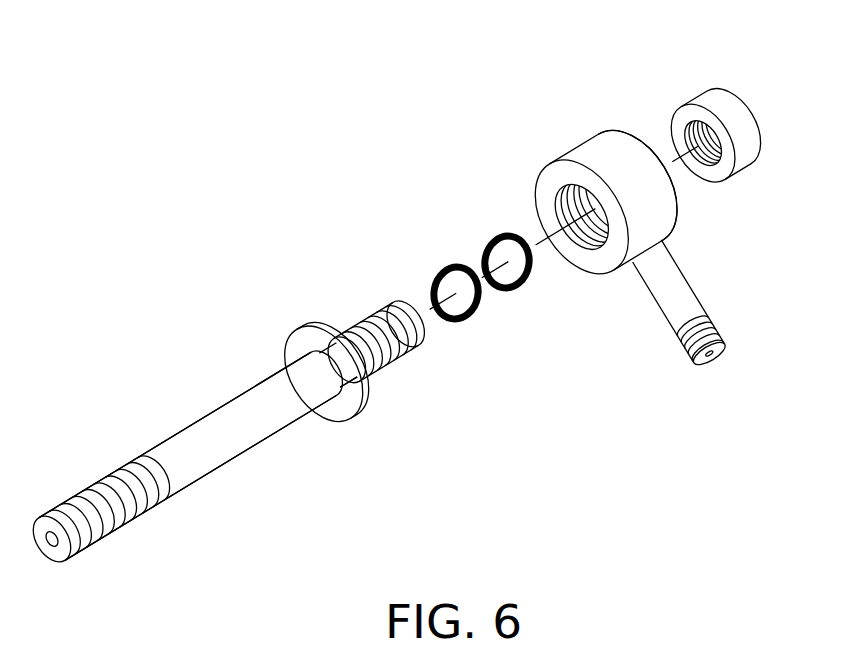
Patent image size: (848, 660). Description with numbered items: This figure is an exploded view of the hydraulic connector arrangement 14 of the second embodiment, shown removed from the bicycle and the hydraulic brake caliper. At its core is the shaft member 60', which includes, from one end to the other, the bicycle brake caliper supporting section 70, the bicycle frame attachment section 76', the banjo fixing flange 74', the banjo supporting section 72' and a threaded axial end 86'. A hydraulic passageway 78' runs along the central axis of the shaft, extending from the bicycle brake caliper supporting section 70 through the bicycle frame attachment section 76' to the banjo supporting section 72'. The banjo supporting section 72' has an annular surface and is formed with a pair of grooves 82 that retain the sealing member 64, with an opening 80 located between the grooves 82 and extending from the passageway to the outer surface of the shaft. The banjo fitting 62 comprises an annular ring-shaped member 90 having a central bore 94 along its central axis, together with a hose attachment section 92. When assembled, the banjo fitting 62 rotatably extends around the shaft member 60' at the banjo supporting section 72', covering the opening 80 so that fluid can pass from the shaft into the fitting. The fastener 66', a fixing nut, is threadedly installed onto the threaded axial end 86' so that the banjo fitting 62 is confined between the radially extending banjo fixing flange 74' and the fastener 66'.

The hydraulic connector arrangement 14 is at (192, 186).
The shaft member 60' is at (188, 456).
The bicycle frame attachment section 76' is at (188, 456).
The hydraulic passageway 78' is at (49, 507).
The bicycle brake caliper supporting section 70 is at (100, 530).
The banjo fixing flange 74' is at (309, 365).
The opening 80 is at (345, 330).
The grooves 82 is at (380, 368).
The banjo supporting section 72' is at (376, 314).
The threaded axial end 86' is at (379, 315).
The sealing member 64 is at (527, 290).
The banjo fitting 62 is at (602, 142).
The central bore 94 is at (583, 253).
The annular ring-shaped member 90 is at (663, 227).
The hose attachment section 92 is at (687, 305).
The fastener 66' is at (709, 115).